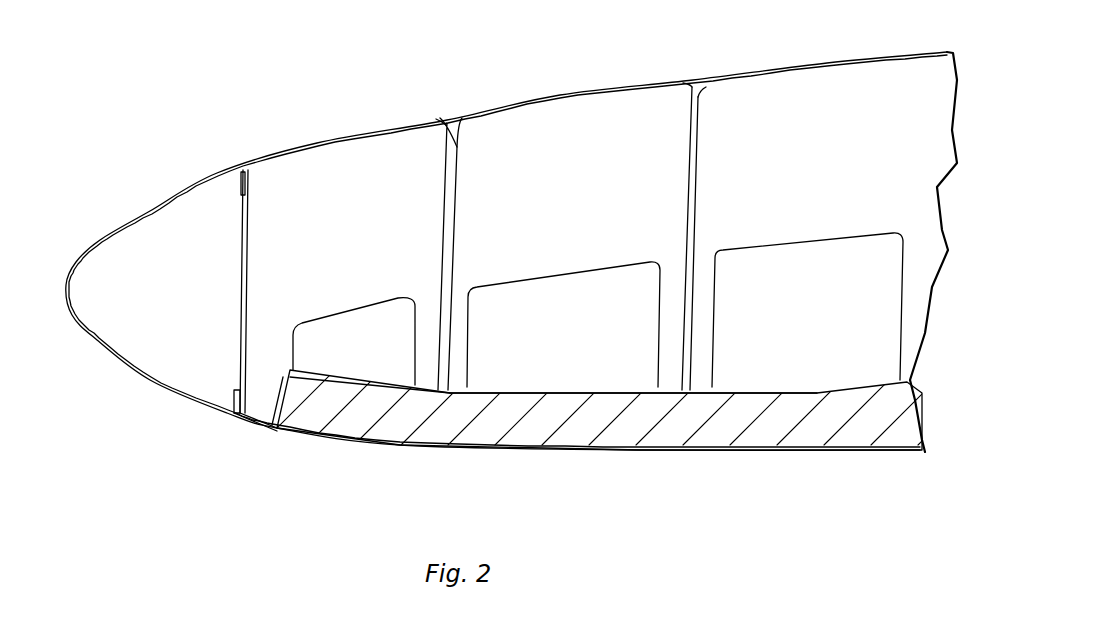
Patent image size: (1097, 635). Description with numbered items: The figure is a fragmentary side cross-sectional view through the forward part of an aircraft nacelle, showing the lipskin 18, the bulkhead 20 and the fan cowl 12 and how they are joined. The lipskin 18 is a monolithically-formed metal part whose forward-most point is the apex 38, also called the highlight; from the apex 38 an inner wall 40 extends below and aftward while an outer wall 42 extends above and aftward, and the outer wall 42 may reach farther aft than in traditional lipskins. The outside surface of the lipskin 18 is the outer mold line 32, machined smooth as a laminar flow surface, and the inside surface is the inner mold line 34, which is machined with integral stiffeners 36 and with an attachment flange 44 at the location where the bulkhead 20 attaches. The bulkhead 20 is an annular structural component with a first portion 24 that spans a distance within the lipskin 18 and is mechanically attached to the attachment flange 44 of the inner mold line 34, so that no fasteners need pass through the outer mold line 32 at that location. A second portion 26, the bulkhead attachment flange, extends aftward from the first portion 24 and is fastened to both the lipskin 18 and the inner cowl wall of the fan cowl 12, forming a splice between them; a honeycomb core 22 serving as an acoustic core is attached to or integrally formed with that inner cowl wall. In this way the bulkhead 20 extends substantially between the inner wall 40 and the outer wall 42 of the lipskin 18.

The fan cowl 12 is at (390, 446).
The lipskin 18 is at (140, 382).
The bulkhead 20 is at (317, 300).
The first portion 24 is at (249, 253).
The honeycomb core 22 is at (607, 393).
The second portion 26 is at (256, 410).
The outer mold line 32 is at (110, 226).
The inner mold line 34 is at (137, 215).
The stiffener 36 is at (700, 92).
The apex 38 is at (65, 293).
The inner wall 40 is at (200, 408).
The outer wall 42 is at (317, 141).
The attachment flange 44 is at (240, 193).